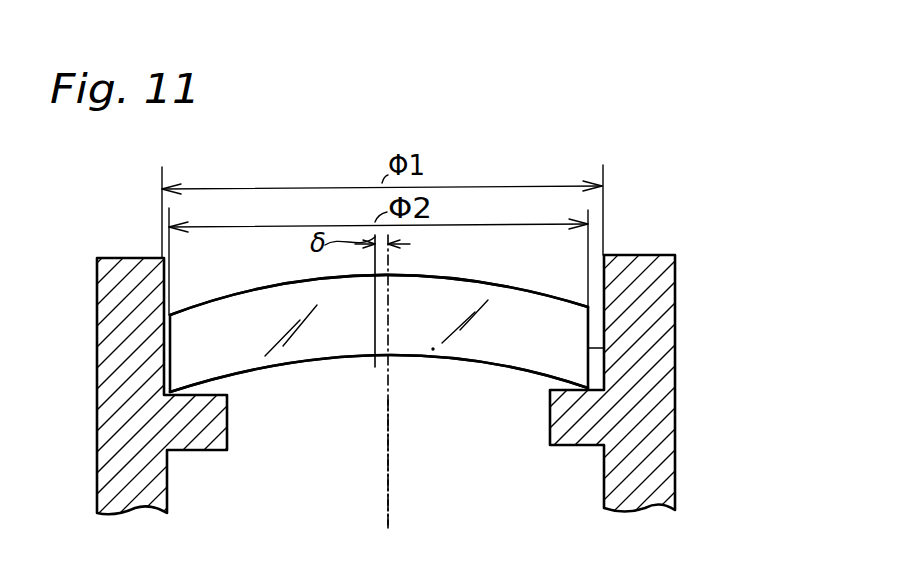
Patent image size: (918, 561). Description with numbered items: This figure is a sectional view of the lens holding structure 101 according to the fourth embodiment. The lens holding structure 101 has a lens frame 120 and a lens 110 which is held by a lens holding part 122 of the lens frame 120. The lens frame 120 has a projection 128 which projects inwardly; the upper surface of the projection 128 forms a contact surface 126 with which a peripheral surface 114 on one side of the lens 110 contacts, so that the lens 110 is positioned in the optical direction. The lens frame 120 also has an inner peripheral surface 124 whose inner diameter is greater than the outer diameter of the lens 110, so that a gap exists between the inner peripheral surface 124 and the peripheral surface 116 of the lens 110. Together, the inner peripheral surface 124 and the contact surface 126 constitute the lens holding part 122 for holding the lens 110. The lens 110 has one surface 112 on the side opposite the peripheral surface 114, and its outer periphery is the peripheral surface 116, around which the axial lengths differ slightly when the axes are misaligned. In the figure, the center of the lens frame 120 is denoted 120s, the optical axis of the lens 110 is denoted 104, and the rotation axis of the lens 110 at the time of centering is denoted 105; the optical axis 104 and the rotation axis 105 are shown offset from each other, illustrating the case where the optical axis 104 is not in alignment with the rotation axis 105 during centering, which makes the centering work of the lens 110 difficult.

The lens holding structure 101 is at (720, 222).
The optical axis 104 is at (392, 262).
The rotation axis 105 is at (375, 262).
The lens 110 is at (478, 278).
The one surface 112 is at (238, 293).
The peripheral surface 114 is at (293, 368).
The peripheral surface 116 is at (604, 348).
The lens frame 120 is at (678, 314).
The center of the lens frame 120s is at (388, 450).
The lens holding part 122 is at (517, 442).
The inner peripheral surface 124 is at (603, 277).
The contact surface 126 is at (550, 382).
The projection 128 is at (568, 433).